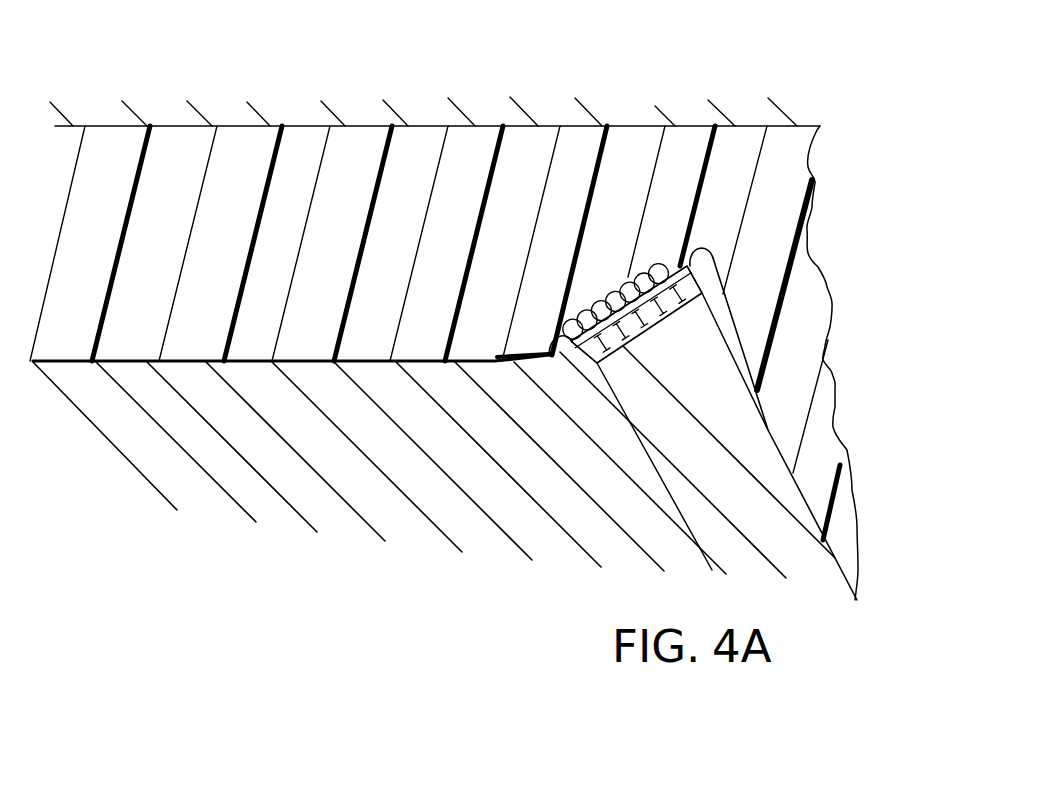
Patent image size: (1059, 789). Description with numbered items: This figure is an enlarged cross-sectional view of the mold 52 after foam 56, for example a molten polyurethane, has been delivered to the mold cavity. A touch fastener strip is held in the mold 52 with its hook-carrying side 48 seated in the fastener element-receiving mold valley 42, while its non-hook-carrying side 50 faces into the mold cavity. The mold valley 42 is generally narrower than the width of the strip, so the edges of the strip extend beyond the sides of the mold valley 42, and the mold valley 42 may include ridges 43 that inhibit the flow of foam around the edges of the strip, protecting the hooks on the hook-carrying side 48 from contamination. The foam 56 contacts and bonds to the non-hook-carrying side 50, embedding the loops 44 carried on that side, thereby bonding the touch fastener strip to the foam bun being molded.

The fastener element-receiving mold valley 42 is at (646, 338).
The ridges 43 is at (518, 357).
The loops 44 is at (620, 293).
The hook-carrying side 48 is at (606, 397).
The non-hook-carrying side 50 is at (650, 264).
The mold 52 is at (173, 455).
The foam 56 is at (787, 199).